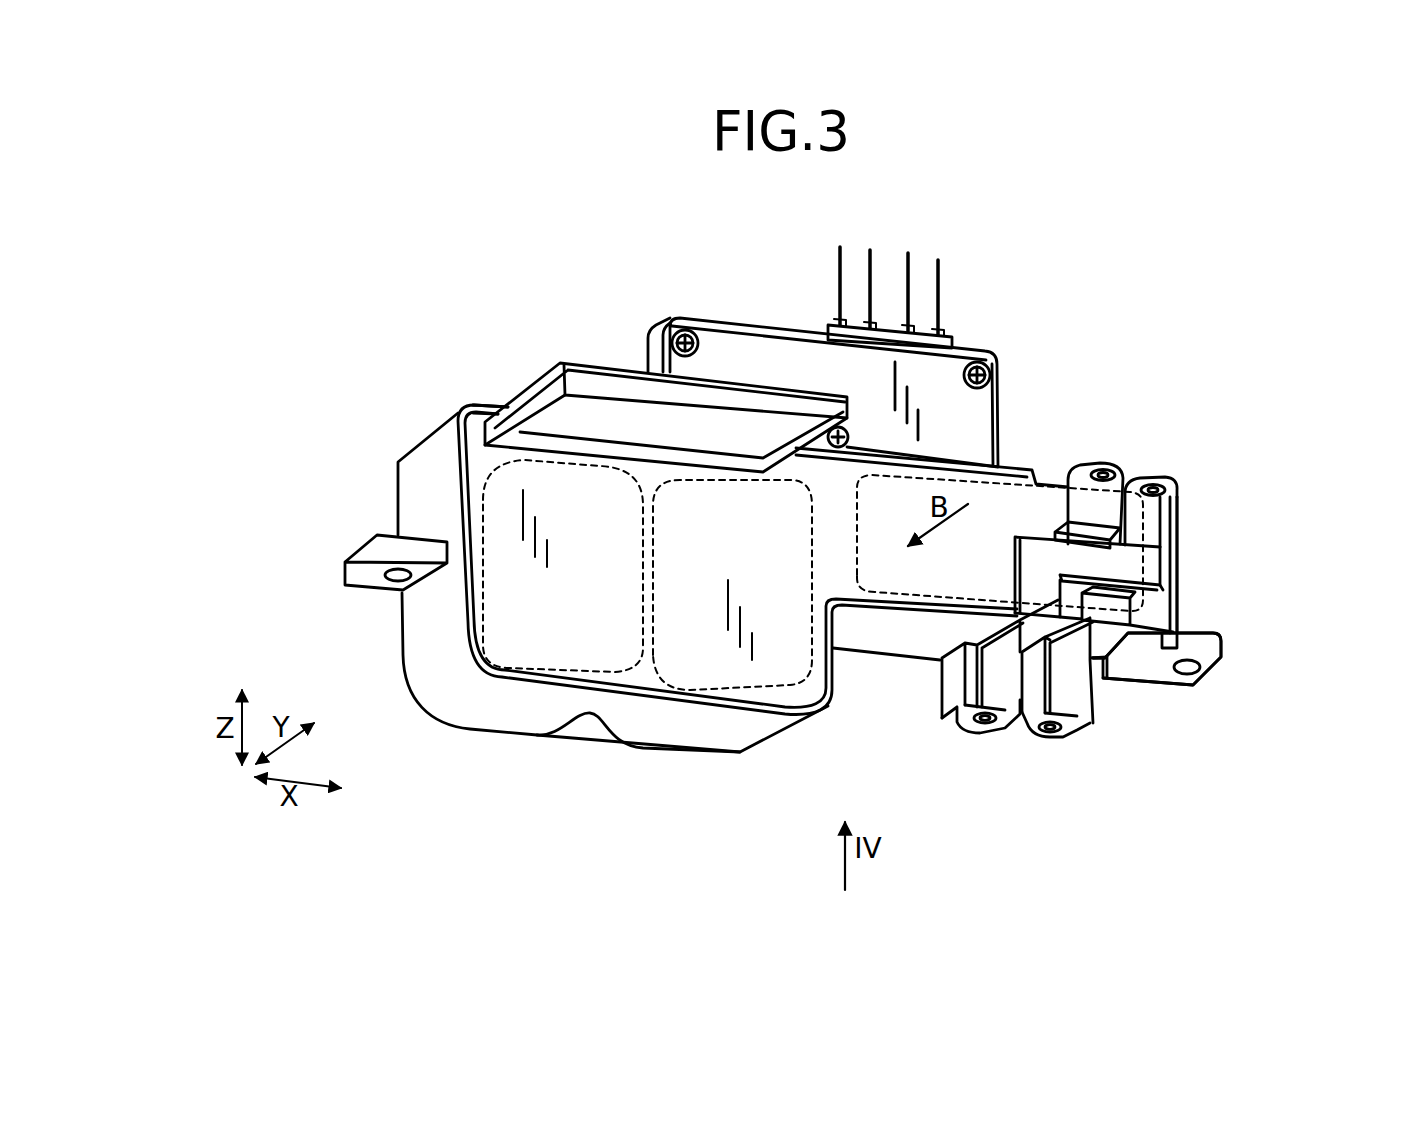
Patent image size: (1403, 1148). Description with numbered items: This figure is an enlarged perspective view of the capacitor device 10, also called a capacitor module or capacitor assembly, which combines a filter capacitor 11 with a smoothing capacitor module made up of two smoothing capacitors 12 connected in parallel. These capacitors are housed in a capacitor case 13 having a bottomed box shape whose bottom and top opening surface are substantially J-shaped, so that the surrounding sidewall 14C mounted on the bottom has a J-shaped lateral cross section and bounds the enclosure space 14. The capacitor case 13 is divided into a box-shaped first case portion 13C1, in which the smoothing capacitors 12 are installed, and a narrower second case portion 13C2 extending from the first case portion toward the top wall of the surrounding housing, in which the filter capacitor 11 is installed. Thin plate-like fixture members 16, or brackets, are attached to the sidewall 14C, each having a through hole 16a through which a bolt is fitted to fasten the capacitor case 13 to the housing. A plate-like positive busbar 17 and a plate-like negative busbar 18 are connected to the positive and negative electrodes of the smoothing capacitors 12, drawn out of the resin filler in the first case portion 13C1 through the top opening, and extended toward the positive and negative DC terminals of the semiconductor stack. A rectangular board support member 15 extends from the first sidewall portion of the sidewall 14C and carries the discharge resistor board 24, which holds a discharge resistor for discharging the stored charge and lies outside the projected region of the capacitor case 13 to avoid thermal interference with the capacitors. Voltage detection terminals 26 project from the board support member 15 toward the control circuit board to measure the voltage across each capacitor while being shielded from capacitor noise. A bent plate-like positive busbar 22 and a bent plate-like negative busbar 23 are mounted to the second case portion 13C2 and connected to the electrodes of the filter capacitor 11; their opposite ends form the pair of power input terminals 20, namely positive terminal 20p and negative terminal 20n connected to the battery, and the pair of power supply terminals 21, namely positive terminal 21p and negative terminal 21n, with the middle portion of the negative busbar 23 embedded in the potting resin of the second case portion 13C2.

The capacitor device 10 is at (600, 757).
The filter capacitor 11 is at (932, 603).
The smoothing capacitors 12 is at (532, 675).
The capacitor case 13 is at (857, 658).
The first case portion 13C1 is at (687, 770).
The second case portion 13C2 is at (1195, 496).
The enclosure space 14 is at (802, 548).
The surrounding sidewall 14C is at (1020, 473).
The board support member 15 is at (647, 351).
The fixture members 16 is at (781, 618).
The through hole 16a is at (400, 579).
The positive busbar 17 is at (666, 376).
The negative busbar 18 is at (705, 400).
The pair of power input terminals 20 is at (1193, 447).
The negative terminal of power input terminals 20n is at (1123, 466).
The positive terminal of power input terminals 20p is at (1230, 472).
The pair of power supply terminals 21 is at (1060, 731).
The negative terminal of power supply terminals 21n is at (1112, 714).
The positive terminal of power supply terminals 21p is at (990, 738).
The positive busbar 22 is at (1172, 563).
The negative busbar 23 is at (1114, 648).
The discharge resistor board 24 is at (970, 410).
The voltage detection terminals 26 is at (960, 252).